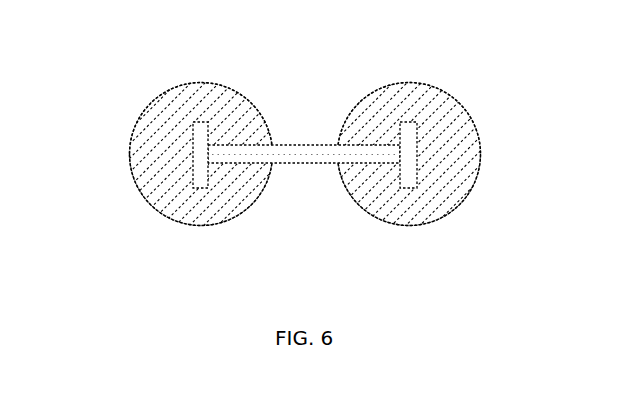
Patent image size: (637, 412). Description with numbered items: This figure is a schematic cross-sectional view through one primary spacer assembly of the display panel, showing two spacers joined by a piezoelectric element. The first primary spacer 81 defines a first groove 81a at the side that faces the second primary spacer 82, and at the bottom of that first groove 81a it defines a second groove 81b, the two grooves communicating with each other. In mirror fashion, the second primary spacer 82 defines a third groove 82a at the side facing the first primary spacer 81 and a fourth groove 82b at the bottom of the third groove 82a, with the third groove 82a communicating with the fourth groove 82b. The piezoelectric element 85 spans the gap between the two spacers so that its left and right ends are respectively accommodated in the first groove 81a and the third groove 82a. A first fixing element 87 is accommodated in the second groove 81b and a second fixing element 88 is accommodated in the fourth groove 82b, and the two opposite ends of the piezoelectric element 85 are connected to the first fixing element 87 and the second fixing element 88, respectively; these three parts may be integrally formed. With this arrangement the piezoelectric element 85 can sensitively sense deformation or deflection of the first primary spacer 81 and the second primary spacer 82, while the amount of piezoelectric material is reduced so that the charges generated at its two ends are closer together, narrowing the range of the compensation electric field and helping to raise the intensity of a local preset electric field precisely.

The first primary spacer 81 is at (205, 97).
The first groove 81a is at (252, 142).
The second groove 81b is at (198, 189).
The second primary spacer 82 is at (410, 107).
The third groove 82a is at (358, 142).
The fourth groove 82b is at (403, 190).
The piezoelectric element 85 is at (300, 145).
The first fixing element 87 is at (194, 152).
The second fixing element 88 is at (416, 160).